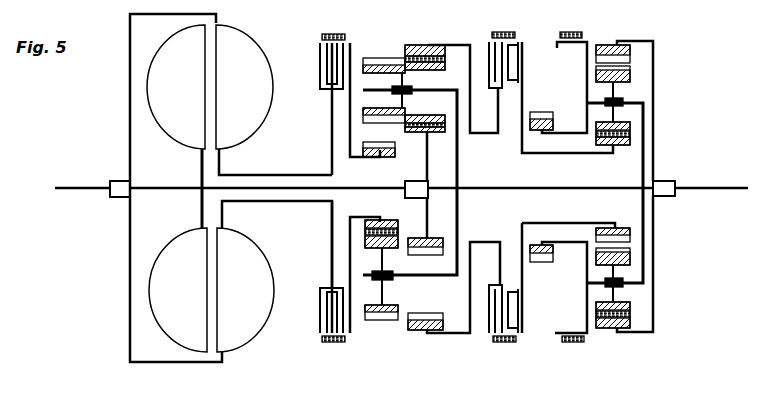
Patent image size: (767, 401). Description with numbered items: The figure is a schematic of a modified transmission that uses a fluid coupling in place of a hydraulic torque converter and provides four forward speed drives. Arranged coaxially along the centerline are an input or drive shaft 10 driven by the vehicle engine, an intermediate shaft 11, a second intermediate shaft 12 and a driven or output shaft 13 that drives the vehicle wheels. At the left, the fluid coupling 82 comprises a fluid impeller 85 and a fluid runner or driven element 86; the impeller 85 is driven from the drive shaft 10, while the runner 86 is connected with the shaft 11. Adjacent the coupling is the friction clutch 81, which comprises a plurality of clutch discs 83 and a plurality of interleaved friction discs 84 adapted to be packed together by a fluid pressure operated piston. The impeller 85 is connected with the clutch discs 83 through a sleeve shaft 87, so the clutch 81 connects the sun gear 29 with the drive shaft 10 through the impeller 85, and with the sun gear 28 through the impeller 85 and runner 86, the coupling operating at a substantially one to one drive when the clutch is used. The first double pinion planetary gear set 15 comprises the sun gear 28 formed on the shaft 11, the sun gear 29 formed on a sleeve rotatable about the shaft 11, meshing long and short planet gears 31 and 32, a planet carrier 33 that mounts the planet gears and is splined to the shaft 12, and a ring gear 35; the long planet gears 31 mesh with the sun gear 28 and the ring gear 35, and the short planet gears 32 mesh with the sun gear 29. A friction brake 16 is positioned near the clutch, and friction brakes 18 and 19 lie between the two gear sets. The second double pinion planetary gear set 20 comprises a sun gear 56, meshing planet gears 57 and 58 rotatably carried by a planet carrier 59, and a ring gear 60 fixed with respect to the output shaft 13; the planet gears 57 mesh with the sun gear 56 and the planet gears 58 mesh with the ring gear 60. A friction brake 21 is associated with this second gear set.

The input or drive shaft 10 is at (70, 188).
The intermediate shaft 11 is at (262, 190).
The second intermediate shaft 12 is at (560, 182).
The driven or output shaft 13 is at (723, 188).
The first double pinion planetary gear set 15 is at (401, 45).
The friction brake 16 is at (332, 32).
The friction brake 18 is at (514, 31).
The friction brake 19 is at (487, 44).
The second double pinion planetary gear set 20 is at (641, 73).
The friction brake 21 is at (577, 31).
The sun gear 28 is at (447, 123).
The sun gear 29 is at (396, 150).
The long planet gears 31 is at (383, 50).
The short planet gears 32 is at (385, 321).
The planet carrier 33 is at (458, 204).
The ring gear 35 is at (424, 313).
The sun gear 56 is at (630, 237).
The planet gears 57 is at (597, 69).
The planet gears 58 is at (630, 250).
The planet carrier 59 is at (645, 148).
The ring gear 60 is at (628, 58).
The friction clutch 81 is at (318, 96).
The fluid coupling 82 is at (260, 35).
The clutch discs 83 is at (321, 313).
The friction discs 84 is at (320, 53).
The fluid impeller 85 is at (260, 264).
The fluid runner or driven element 86 is at (180, 244).
The sleeve shaft 87 is at (297, 172).